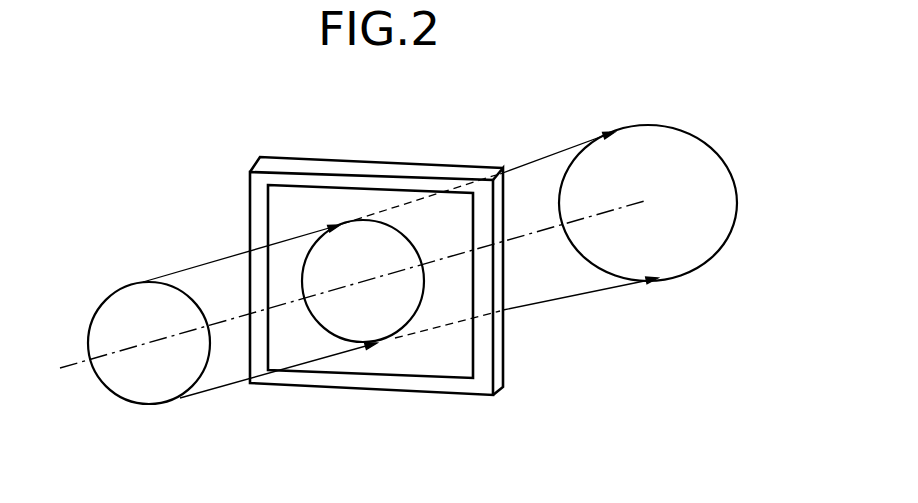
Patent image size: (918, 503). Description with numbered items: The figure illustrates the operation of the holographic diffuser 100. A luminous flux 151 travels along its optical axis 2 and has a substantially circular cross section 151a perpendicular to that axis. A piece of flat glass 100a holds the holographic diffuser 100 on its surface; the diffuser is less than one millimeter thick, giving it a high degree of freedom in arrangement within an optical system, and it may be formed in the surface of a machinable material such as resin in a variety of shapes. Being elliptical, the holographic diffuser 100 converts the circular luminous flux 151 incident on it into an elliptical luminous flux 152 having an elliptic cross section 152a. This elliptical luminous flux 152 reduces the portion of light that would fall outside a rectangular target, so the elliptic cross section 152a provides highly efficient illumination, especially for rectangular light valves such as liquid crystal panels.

The optical axis 2 is at (72, 364).
The holographic diffuser 100 is at (376, 280).
The piece of flat glass 100a is at (383, 162).
The luminous flux 151 is at (225, 388).
The circular cross section 151a is at (112, 395).
The elliptical luminous flux 152 is at (590, 295).
The elliptic cross section 152a is at (690, 132).